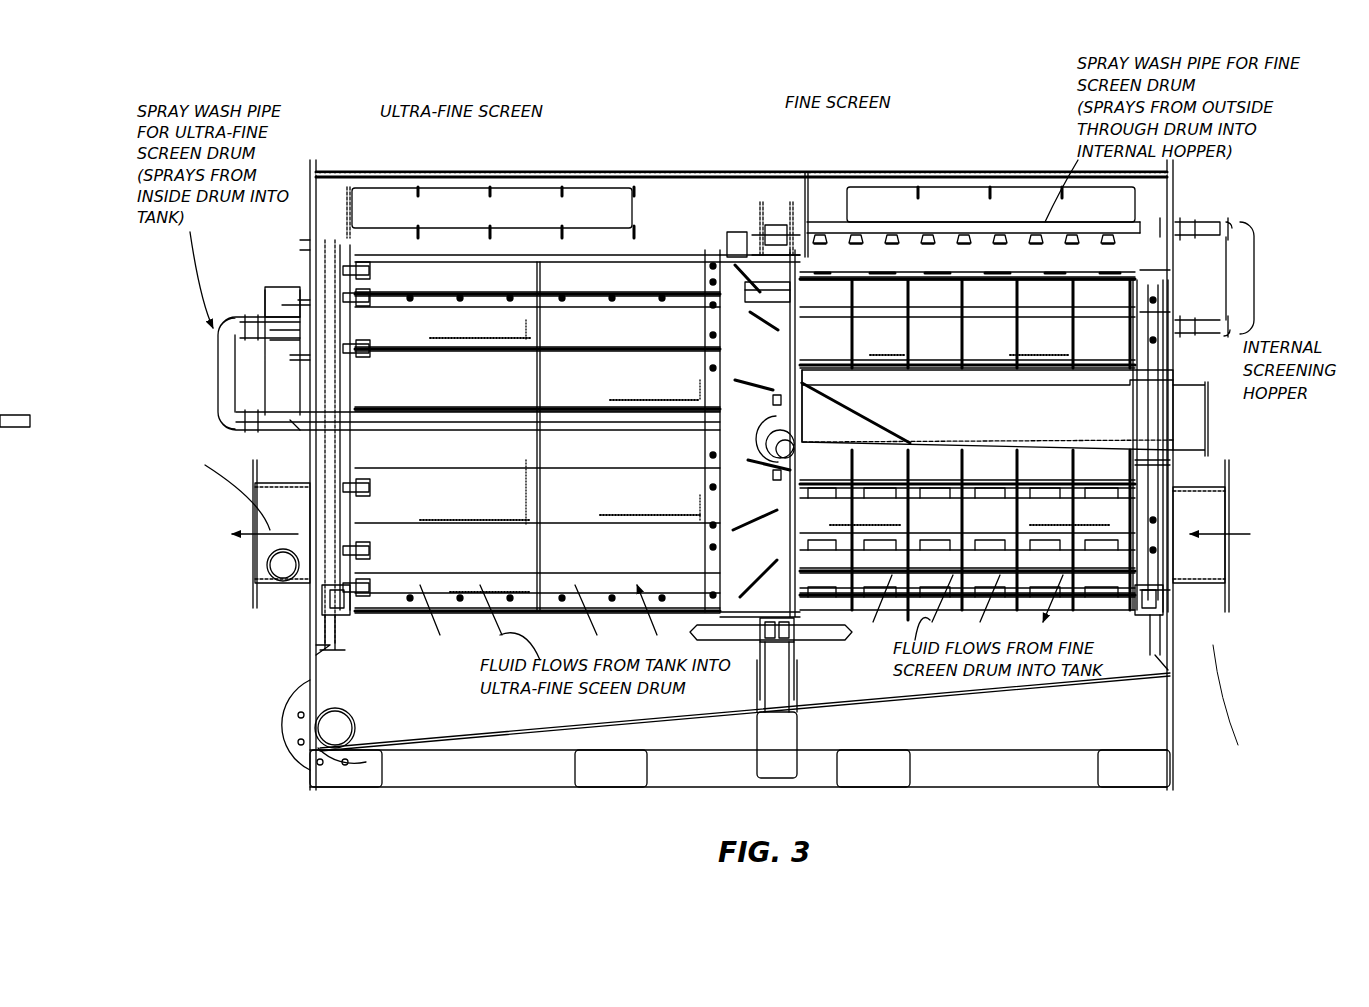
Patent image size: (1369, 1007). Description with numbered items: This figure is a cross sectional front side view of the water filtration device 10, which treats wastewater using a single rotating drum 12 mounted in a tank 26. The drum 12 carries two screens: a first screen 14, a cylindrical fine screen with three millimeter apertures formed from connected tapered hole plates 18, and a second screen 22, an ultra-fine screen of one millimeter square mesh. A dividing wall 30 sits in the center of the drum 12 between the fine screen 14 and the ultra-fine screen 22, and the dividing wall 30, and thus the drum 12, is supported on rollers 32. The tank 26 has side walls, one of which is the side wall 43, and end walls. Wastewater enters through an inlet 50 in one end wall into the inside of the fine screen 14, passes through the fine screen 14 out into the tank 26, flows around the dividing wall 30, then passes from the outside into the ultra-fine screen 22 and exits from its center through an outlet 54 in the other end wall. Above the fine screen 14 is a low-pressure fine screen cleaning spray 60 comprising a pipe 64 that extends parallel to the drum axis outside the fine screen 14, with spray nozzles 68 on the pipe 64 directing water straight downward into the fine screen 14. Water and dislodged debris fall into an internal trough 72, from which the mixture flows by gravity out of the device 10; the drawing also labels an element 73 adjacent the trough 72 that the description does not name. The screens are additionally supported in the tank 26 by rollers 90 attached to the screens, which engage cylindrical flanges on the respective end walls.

The water filtration device 10 is at (612, 140).
The drum 12 is at (708, 238).
The first screen 14 is at (877, 268).
The tapered hole plates 18 is at (1097, 468).
The second screen 22 is at (514, 265).
The tank 26 is at (308, 682).
The dividing wall 30 is at (786, 330).
The rollers 32 is at (773, 647).
The side wall 43 is at (458, 697).
The inlet 50 is at (1228, 565).
The outlet 54 is at (255, 572).
The fine screen cleaning spray 60 is at (1073, 212).
The pipe 64 is at (948, 222).
The spray nozzles 68 is at (906, 238).
The trough 72 is at (1173, 390).
The hopper outlet 73 is at (1200, 428).
The rollers 90 is at (330, 601).